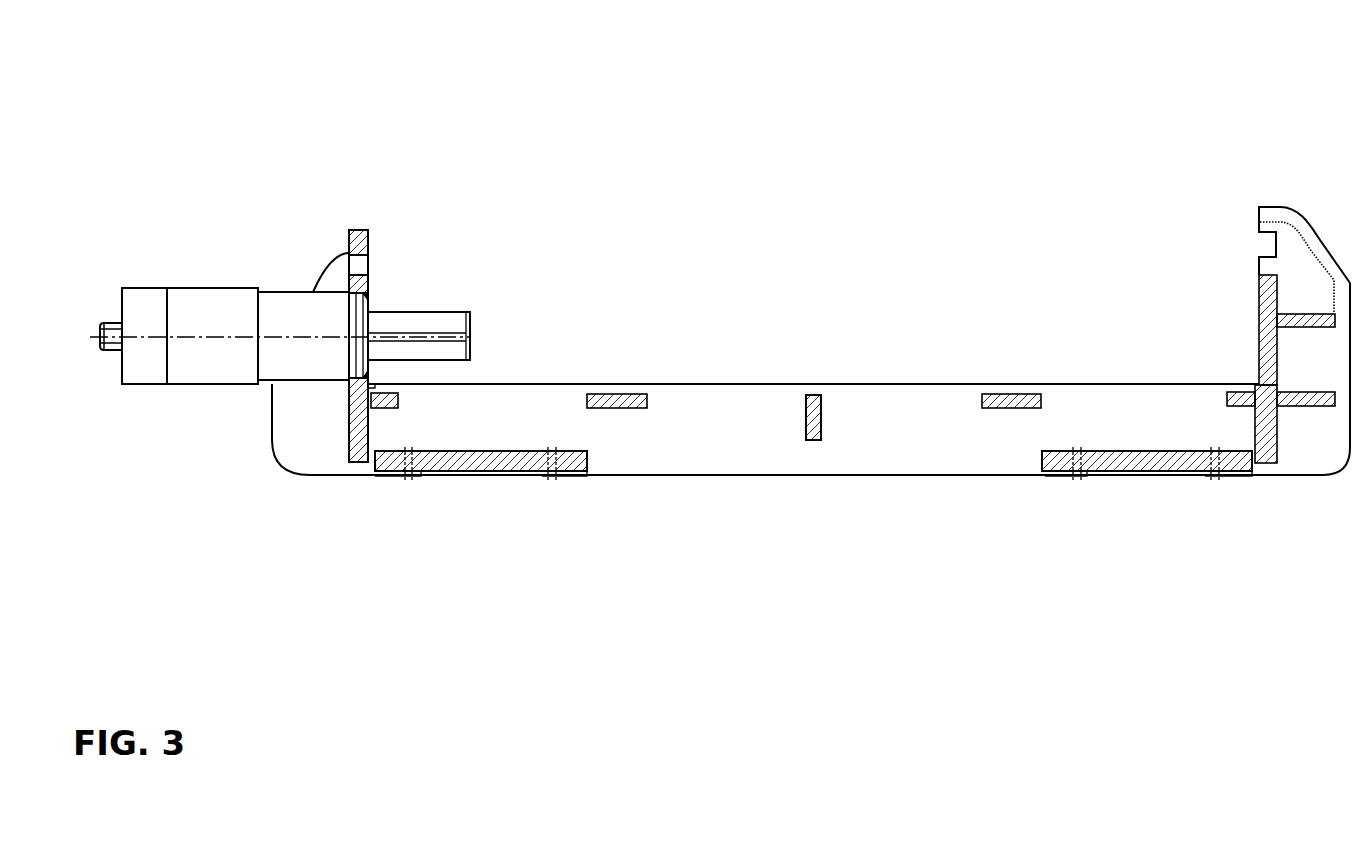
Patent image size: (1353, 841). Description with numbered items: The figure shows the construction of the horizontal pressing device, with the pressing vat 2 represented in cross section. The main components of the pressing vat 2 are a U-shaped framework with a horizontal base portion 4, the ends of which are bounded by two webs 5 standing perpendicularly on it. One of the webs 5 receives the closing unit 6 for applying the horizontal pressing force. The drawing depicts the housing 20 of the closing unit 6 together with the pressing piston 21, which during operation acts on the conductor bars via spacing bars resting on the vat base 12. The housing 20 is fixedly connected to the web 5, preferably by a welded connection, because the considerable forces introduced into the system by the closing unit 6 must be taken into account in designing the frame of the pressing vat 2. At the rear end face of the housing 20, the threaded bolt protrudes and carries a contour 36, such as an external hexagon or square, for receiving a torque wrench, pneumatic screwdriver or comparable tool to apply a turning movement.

The pressing vat 2 is at (1036, 198).
The horizontal base portion 4 is at (888, 419).
The web 5 is at (1314, 354).
The closing unit 6 is at (222, 371).
The vat base 12 is at (667, 384).
The housing 20 is at (228, 307).
The pressing piston 21 is at (430, 321).
The contour 36 is at (107, 320).